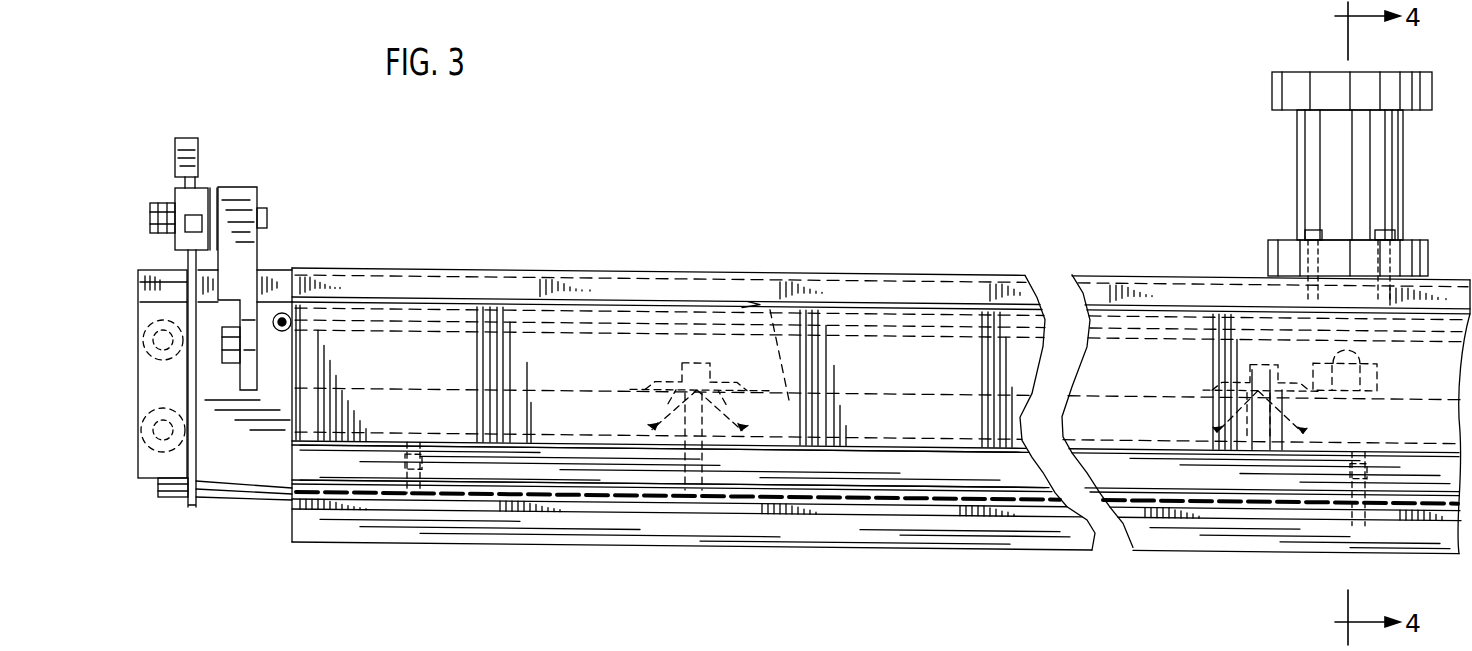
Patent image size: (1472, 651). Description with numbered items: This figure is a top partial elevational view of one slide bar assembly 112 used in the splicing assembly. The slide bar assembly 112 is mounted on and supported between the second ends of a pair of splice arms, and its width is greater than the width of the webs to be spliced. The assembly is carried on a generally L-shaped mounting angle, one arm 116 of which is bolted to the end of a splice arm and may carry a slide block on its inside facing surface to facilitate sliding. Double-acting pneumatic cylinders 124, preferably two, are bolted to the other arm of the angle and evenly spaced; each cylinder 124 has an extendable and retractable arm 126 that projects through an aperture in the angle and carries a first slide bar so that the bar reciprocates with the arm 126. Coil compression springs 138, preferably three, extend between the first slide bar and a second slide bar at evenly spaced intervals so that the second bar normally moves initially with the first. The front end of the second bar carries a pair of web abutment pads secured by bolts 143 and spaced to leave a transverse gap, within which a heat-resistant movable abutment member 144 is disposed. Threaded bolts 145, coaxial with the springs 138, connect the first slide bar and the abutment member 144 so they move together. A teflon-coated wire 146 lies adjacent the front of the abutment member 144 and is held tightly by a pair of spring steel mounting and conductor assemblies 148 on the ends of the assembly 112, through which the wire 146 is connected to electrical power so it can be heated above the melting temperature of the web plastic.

The slide bar assembly 112 is at (496, 242).
The arm of the mounting angle 116 is at (140, 400).
The double-acting pneumatic cylinder 124 is at (1297, 175).
The extendable/retractable arm of the cylinder 126 is at (1373, 385).
The coil compression springs 138 is at (752, 300).
The bolts 143 is at (423, 505).
The movable abutment member 144 is at (647, 470).
The threaded bolts 145 is at (705, 365).
The wire 146 is at (246, 500).
The spring steel mounting and conductor assemblies 148 is at (180, 260).